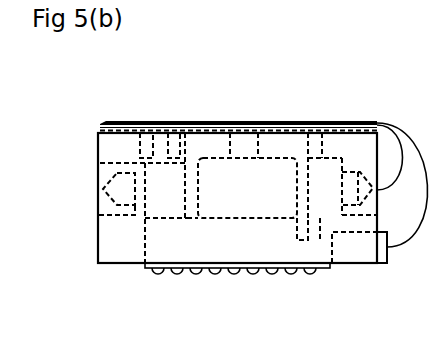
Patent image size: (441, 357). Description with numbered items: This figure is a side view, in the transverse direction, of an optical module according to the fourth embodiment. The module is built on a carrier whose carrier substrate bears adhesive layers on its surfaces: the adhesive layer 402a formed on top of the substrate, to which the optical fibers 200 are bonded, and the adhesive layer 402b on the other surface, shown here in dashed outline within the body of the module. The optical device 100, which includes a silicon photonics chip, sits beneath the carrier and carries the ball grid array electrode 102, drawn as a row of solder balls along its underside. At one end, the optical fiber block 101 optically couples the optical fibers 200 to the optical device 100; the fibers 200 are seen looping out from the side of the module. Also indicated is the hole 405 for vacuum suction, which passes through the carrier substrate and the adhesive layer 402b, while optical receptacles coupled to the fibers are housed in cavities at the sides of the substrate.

The optical fibers 200 is at (400, 122).
The adhesive layer 402a is at (100, 124).
The adhesive layer 402b is at (137, 216).
The hole 405 is at (243, 145).
The optical device 100 is at (144, 266).
The optical fiber block 101 is at (390, 265).
The ball grid array electrode 102 is at (213, 275).